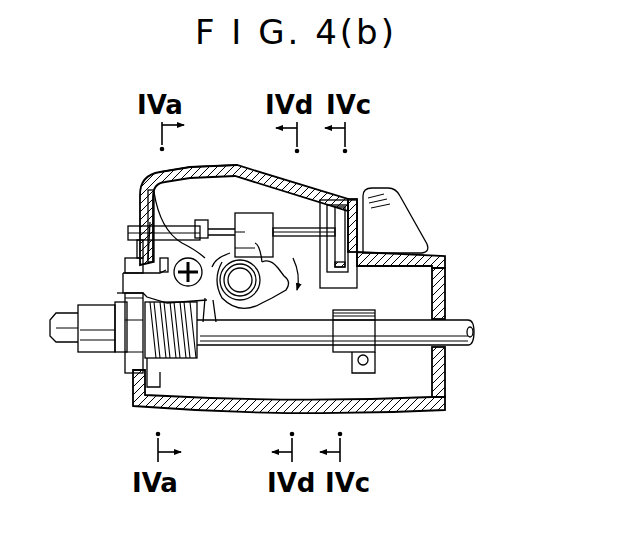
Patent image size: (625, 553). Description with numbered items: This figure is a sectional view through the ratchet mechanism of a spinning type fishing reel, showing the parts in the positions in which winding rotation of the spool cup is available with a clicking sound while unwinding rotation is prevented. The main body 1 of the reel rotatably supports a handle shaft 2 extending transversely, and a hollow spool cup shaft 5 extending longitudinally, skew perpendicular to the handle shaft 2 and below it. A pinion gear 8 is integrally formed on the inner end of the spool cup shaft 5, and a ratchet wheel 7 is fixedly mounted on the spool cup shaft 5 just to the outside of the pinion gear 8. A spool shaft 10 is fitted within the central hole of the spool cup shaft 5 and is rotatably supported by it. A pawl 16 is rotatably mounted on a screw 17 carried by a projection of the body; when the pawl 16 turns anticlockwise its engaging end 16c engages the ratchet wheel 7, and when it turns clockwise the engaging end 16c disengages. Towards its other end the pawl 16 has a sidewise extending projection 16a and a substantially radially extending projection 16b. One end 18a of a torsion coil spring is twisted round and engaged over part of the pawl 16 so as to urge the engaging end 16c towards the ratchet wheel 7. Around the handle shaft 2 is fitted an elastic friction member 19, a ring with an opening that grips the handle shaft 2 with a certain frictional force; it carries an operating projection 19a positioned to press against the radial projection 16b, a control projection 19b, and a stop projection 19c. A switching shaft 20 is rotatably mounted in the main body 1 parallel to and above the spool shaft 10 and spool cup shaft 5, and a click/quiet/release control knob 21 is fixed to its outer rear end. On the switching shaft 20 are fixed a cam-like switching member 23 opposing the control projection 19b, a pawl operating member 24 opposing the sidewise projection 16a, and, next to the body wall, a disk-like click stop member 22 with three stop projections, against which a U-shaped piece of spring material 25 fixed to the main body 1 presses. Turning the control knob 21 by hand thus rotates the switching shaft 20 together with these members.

The main body 1 is at (412, 402).
The handle shaft 2 is at (270, 307).
The spool cup shaft 5 is at (97, 341).
The ratchet wheel 7 is at (127, 370).
The pinion gear 8 is at (186, 358).
The spool shaft 10 is at (67, 334).
The pawl 16 is at (121, 290).
The sidewise extending projection 16a is at (210, 257).
The radially extending projection 16b is at (218, 324).
The engaging end 16c is at (117, 290).
The screw 17 is at (133, 253).
The other end of torsion coil spring 18a is at (125, 260).
The friction member 19 is at (245, 310).
The operating projection 19a is at (150, 222).
The control projection 19b is at (274, 289).
The stop projection 19c is at (227, 238).
The switching shaft 20 is at (130, 228).
The click/quiet/release control knob 21 is at (405, 231).
The click stop member 22 is at (334, 224).
The switching member 23 is at (255, 213).
The pawl operating member 24 is at (190, 181).
The piece of spring material 25 is at (338, 208).